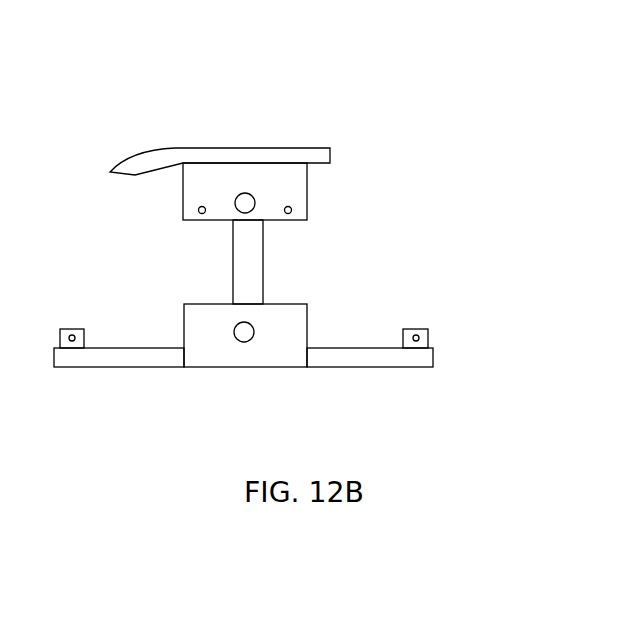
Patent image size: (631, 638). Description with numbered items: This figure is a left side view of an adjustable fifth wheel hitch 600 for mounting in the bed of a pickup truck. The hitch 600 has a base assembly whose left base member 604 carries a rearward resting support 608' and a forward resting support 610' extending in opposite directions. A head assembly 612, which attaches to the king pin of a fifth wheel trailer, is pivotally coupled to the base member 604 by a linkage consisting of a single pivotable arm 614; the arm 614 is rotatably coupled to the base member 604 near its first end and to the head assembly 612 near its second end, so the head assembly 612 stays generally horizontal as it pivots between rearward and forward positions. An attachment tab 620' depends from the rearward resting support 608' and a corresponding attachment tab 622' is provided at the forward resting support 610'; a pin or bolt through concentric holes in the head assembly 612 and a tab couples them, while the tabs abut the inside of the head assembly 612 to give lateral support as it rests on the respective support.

The adjustable fifth wheel hitch 600 is at (440, 160).
The head assembly 612 is at (290, 120).
The pivotable arm 614 is at (263, 257).
The left base member 604 is at (223, 349).
The rearward resting support 608' is at (111, 400).
The forward resting support 610' is at (406, 385).
The attachment tab 620' is at (118, 310).
The attachment tab 622' is at (469, 313).